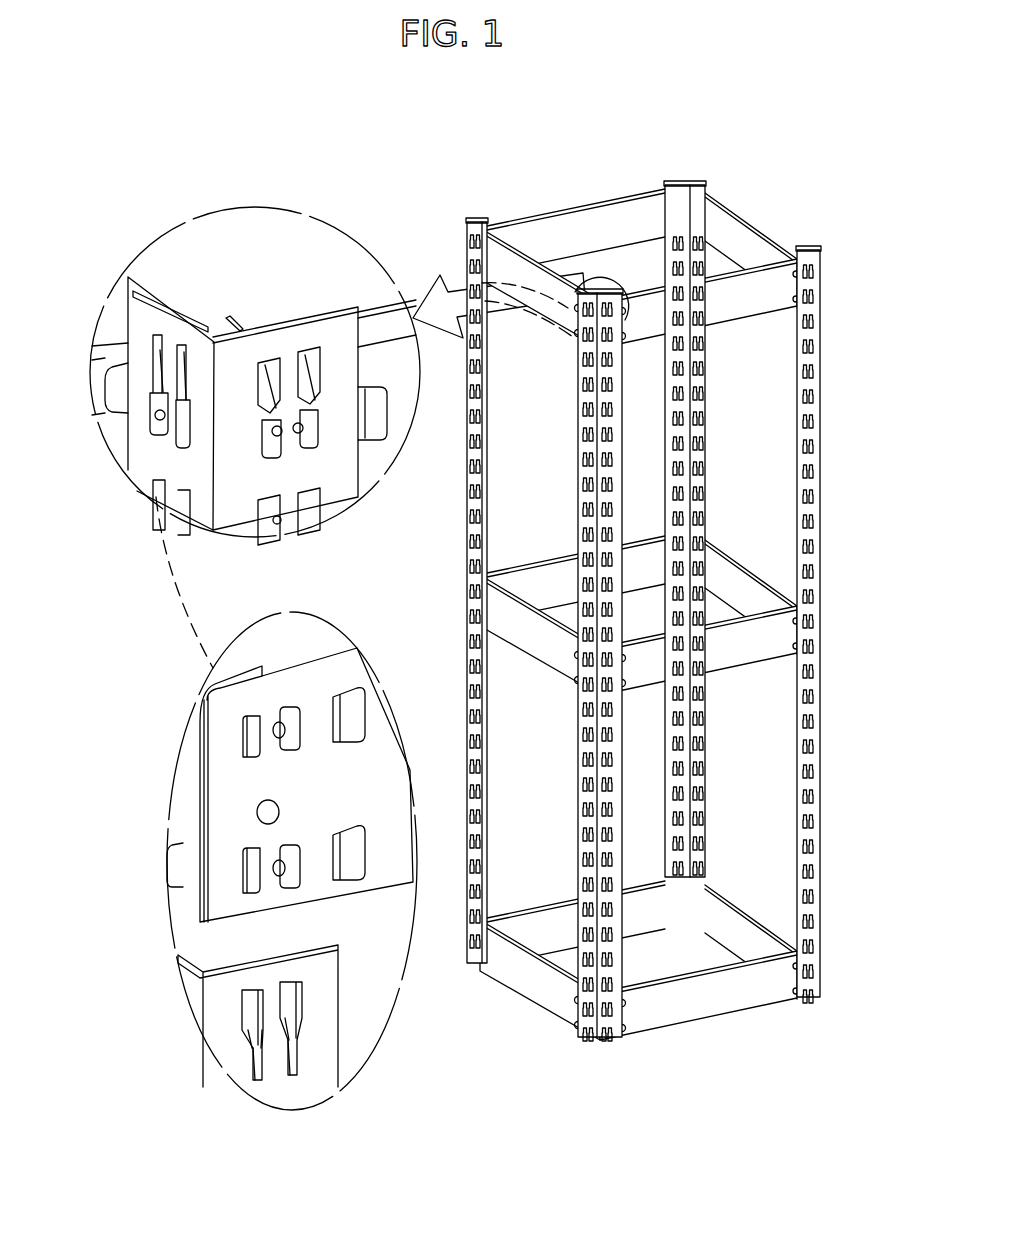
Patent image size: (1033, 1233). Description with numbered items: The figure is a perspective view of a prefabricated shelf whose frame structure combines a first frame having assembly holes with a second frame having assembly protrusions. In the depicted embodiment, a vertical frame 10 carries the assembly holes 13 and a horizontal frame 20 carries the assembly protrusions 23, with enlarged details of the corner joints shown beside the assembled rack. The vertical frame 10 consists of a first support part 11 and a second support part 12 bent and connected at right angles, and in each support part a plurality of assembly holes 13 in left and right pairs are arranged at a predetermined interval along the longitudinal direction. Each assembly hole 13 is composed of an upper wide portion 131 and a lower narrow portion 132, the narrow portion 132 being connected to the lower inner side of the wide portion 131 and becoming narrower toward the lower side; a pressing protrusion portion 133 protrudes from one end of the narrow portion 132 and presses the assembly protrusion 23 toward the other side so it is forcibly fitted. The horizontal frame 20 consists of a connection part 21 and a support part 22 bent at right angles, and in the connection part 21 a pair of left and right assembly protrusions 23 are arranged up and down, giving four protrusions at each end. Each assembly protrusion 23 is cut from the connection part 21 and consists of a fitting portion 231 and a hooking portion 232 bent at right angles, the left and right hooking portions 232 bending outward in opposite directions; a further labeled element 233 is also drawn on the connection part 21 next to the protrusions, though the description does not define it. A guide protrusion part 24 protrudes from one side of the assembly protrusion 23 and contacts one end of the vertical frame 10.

The vertical frame 10 is at (258, 377).
The first support part 11 is at (173, 462).
The second support part 12 is at (322, 483).
The assembly hole 13 is at (246, 380).
The wide portion 131 is at (307, 1000).
The narrow portion 132 is at (287, 1055).
The pressing protrusion portion 133 is at (300, 1043).
The horizontal frame 20 is at (588, 187).
The connection part 21 is at (377, 448).
The support part 22 is at (382, 330).
The assembly protrusion 23 is at (313, 427).
The fitting portion 231 is at (282, 716).
The hooking portion 232 is at (302, 727).
The auxiliary hook 233 is at (277, 720).
The guide protrusion part 24 is at (378, 413).